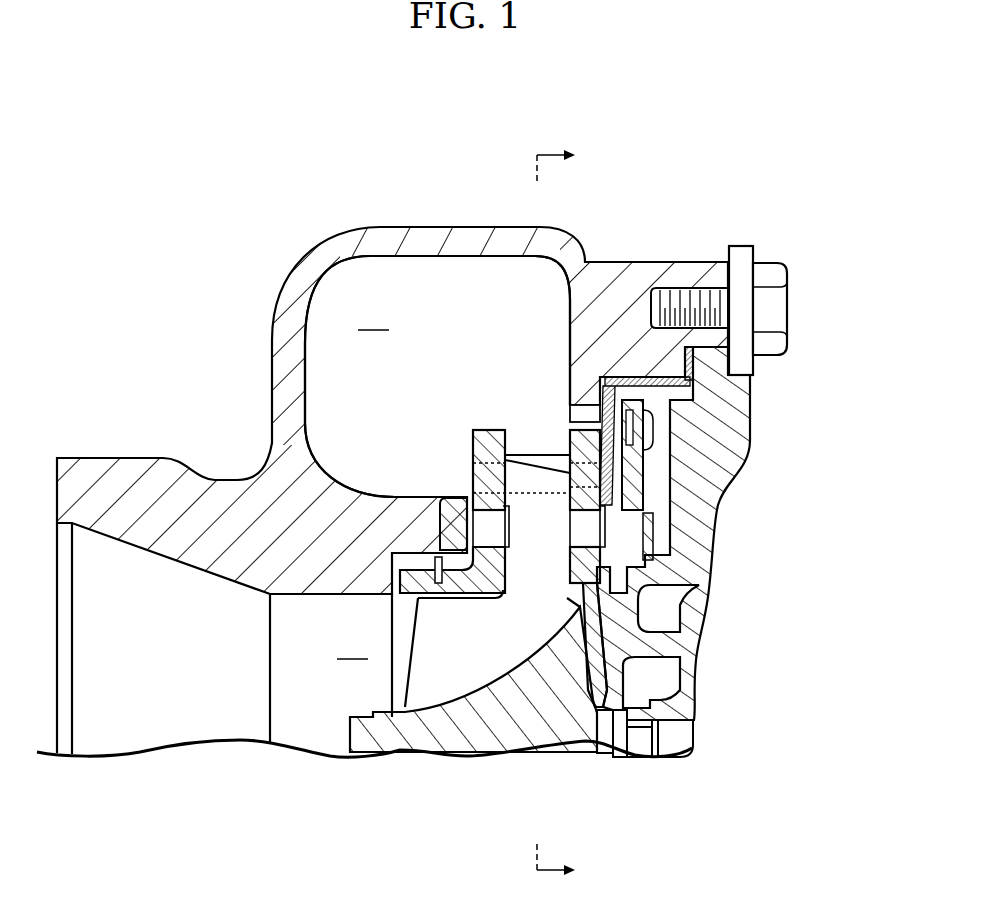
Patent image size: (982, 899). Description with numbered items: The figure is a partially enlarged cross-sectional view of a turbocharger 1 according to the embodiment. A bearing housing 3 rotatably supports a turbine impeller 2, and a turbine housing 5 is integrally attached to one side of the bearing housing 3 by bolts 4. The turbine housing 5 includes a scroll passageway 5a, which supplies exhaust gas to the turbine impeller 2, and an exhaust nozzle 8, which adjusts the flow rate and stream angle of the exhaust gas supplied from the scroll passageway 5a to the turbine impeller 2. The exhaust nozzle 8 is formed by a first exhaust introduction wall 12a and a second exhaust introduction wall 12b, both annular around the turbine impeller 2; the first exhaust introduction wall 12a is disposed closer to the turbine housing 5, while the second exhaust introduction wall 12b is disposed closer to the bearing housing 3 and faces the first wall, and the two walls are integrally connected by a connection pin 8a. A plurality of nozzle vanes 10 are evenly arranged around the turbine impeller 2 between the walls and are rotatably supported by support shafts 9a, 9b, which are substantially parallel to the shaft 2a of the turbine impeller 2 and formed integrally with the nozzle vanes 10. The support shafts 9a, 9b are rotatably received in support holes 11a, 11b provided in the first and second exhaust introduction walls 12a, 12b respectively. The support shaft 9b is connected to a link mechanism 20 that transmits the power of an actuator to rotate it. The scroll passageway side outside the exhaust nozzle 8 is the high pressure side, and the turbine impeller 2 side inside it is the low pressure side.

The turbocharger 1 is at (164, 274).
The turbine impeller 2 is at (468, 748).
The shaft 2a is at (667, 742).
The bearing housing 3 is at (710, 487).
The bolts 4 is at (773, 308).
The turbine housing 5 is at (237, 487).
The scroll passageway 5a is at (350, 297).
The exhaust nozzle 8 is at (557, 420).
The connection pin 8a is at (537, 460).
The support shaft 9a is at (477, 533).
The support shaft 9b is at (590, 523).
The nozzle vanes 10 is at (532, 590).
The support hole 11a is at (452, 512).
The support hole 11b is at (583, 538).
The first exhaust introduction wall 12a is at (493, 432).
The second exhaust introduction wall 12b is at (547, 405).
The link mechanism 20 is at (668, 468).